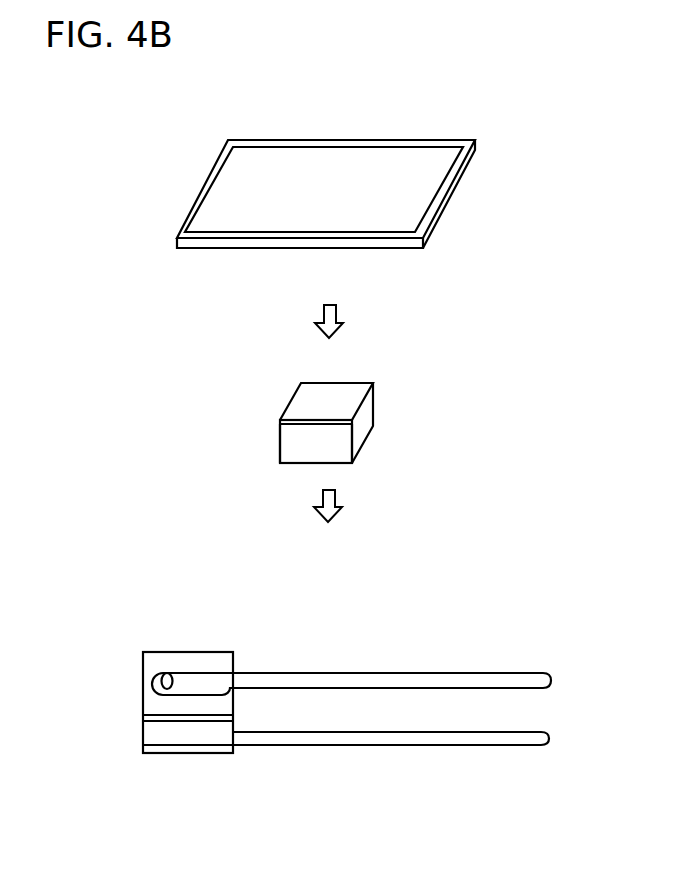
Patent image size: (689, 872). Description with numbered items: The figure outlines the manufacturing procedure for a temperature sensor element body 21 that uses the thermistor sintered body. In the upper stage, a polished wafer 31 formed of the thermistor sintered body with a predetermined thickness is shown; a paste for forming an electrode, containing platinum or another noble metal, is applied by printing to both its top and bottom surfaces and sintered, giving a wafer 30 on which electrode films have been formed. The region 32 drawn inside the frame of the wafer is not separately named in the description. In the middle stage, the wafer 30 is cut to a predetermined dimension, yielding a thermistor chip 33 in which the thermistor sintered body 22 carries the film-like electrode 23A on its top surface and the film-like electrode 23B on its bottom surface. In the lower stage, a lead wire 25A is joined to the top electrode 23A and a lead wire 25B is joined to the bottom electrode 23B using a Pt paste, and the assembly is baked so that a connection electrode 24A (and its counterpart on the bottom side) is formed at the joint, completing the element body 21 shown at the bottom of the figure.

The element body 21 is at (329, 626).
The dielectric body 22 is at (286, 450).
The electrode 23A is at (290, 403).
The electrode 23B is at (340, 465).
The connection electrode 24A is at (162, 677).
The lead wire 25A is at (487, 673).
The lead wire 25B is at (477, 746).
The wafer 30 is at (348, 136).
The wafer 31 is at (267, 249).
The opening 32 is at (231, 181).
The thermistor chip 33 is at (373, 373).